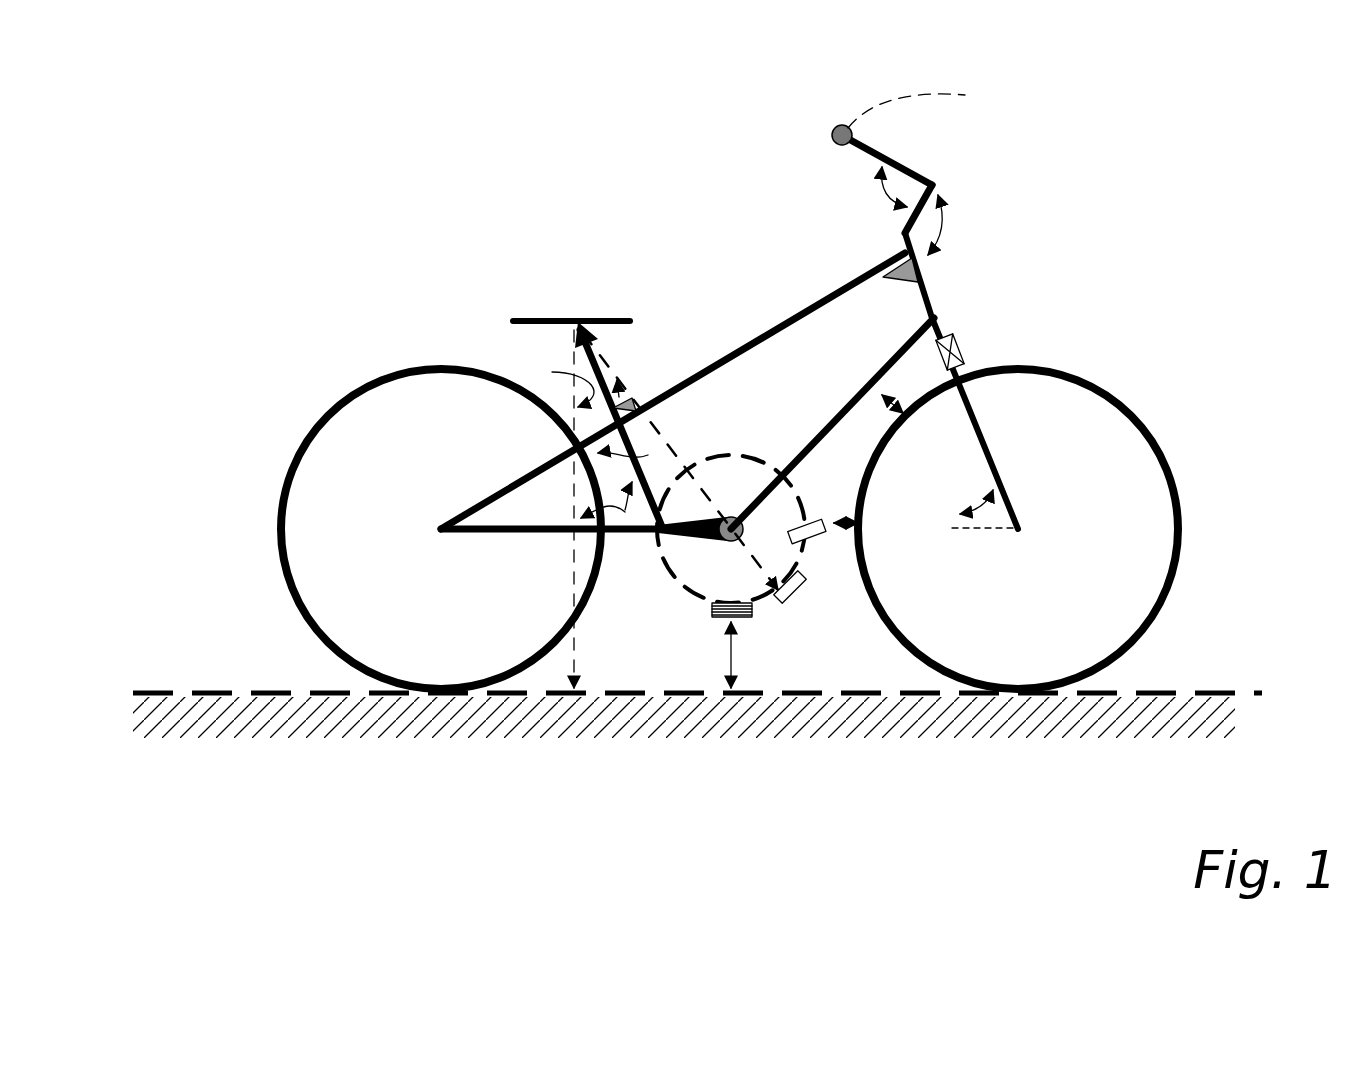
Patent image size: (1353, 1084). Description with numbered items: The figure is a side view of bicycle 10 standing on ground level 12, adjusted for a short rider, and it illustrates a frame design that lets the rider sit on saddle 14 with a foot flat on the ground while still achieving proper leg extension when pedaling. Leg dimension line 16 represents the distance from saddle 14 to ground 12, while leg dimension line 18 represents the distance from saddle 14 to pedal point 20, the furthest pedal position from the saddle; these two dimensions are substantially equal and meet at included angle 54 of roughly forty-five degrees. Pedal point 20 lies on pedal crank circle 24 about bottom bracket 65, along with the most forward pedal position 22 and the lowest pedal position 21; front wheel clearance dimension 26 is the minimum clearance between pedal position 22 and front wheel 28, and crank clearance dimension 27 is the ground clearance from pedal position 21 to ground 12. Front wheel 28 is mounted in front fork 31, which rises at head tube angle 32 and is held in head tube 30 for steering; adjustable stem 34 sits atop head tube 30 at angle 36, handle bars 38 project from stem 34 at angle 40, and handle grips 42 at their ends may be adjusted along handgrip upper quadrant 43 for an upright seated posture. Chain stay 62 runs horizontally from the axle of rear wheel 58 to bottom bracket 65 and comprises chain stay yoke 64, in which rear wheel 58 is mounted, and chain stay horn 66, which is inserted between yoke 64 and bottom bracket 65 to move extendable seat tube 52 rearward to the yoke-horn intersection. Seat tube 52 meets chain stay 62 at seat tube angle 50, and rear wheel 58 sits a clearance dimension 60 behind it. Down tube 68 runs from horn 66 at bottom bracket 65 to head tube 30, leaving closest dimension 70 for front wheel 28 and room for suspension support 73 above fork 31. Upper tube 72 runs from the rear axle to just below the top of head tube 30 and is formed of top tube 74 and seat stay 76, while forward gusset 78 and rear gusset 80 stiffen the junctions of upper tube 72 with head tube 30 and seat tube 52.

The bicycle 10 is at (256, 575).
The ground level 12 is at (180, 694).
The saddle 14 is at (602, 320).
The leg dimension line 16 is at (578, 660).
The leg dimension line 18 is at (688, 470).
The pedal point 20 is at (795, 600).
The pedal position 21 is at (712, 610).
The pedal position 22 is at (812, 522).
The pedal crank circle 24 is at (748, 455).
The front wheel clearance dimension 26 is at (848, 535).
The crank clearance dimension 27 is at (728, 650).
The front wheel 28 is at (1172, 570).
The head tube 30 is at (930, 305).
The front fork 31 is at (990, 455).
The head tube angle 32 is at (968, 508).
The adjustable stem 34 is at (910, 222).
The angle 36 is at (937, 245).
The handle bars 38 is at (905, 165).
The angle 40 is at (886, 195).
The handle grips 42 is at (832, 135).
The handgrip upper quadrant 43 is at (900, 92).
The seat tube angle 50 is at (615, 506).
The extendable seat tube 52 is at (630, 430).
The included angle 54 is at (553, 381).
The rear wheel 58 is at (450, 377).
The clearance dimension 60 is at (637, 450).
The chain stay 62 is at (493, 540).
The chain stay yoke 64 is at (540, 537).
The bottom bracket 65 is at (731, 517).
The chain stay horn 66 is at (715, 540).
The down tube 68 is at (838, 412).
The closest dimension 70 is at (890, 405).
The upper tube 72 is at (772, 314).
The suspension support 73 is at (958, 350).
The top tube 74 is at (700, 378).
The seat stay 76 is at (523, 473).
The forward gusset 78 is at (900, 275).
The rear gusset 80 is at (630, 400).